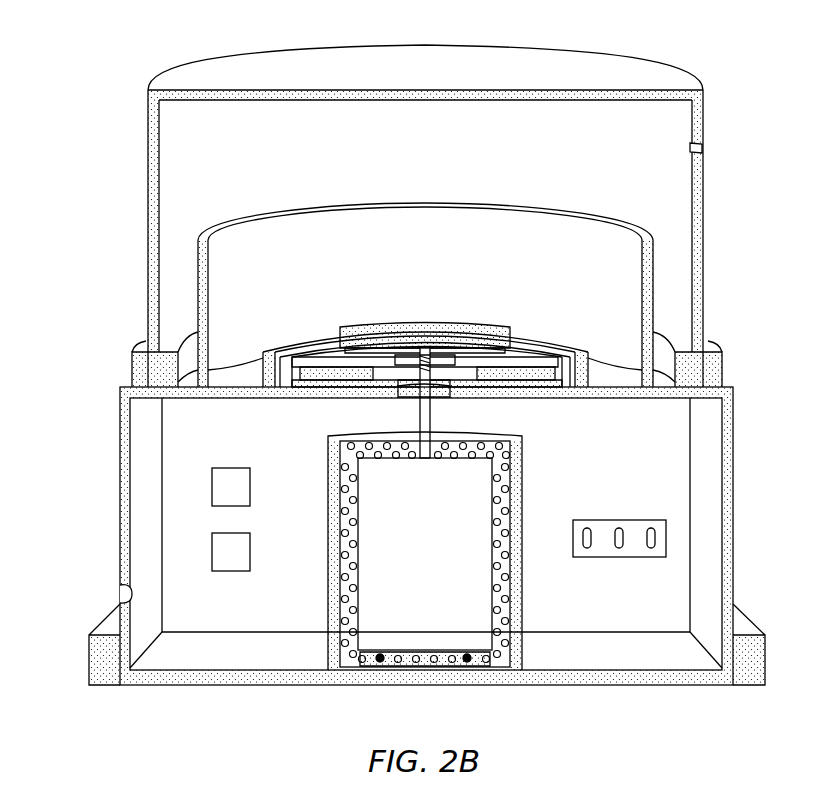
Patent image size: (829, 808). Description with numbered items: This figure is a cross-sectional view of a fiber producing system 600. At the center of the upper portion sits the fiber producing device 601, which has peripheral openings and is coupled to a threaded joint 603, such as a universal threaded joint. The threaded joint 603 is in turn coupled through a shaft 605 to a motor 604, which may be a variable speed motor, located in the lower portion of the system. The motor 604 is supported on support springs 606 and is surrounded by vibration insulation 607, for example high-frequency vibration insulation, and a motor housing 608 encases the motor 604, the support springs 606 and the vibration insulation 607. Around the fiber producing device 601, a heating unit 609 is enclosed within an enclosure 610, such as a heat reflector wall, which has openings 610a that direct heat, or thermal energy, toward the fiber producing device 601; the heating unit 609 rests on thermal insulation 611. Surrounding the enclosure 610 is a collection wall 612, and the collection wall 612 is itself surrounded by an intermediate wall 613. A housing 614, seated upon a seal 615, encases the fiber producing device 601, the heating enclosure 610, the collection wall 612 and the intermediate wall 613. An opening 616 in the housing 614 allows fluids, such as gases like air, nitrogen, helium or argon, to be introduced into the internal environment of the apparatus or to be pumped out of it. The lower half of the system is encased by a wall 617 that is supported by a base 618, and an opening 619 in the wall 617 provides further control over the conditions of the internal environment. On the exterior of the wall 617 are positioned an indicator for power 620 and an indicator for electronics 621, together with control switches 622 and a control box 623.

The fiber producing system 600 is at (745, 283).
The fiber producing device 601 is at (411, 326).
The threaded joint 603 is at (432, 366).
The motor 604 is at (440, 635).
The shaft 605 is at (432, 401).
The support springs 606 is at (378, 662).
The vibration insulation 607 is at (522, 449).
The motor housing 608 is at (340, 562).
The heating unit 609 is at (333, 367).
The enclosure 610 is at (291, 355).
The openings 610a is at (500, 345).
The thermal insulation 611 is at (365, 383).
The collection wall 612 is at (300, 350).
The intermediate wall 613 is at (355, 220).
The housing 614 is at (156, 236).
The seal 615 is at (132, 358).
The opening 616 is at (702, 149).
The wall 617 is at (140, 466).
The base 618 is at (103, 658).
The opening 619 is at (122, 592).
The indicator for power 620 is at (233, 481).
The indicator for electronics 621 is at (228, 559).
The control switches 622 is at (650, 550).
The control box 623 is at (618, 520).